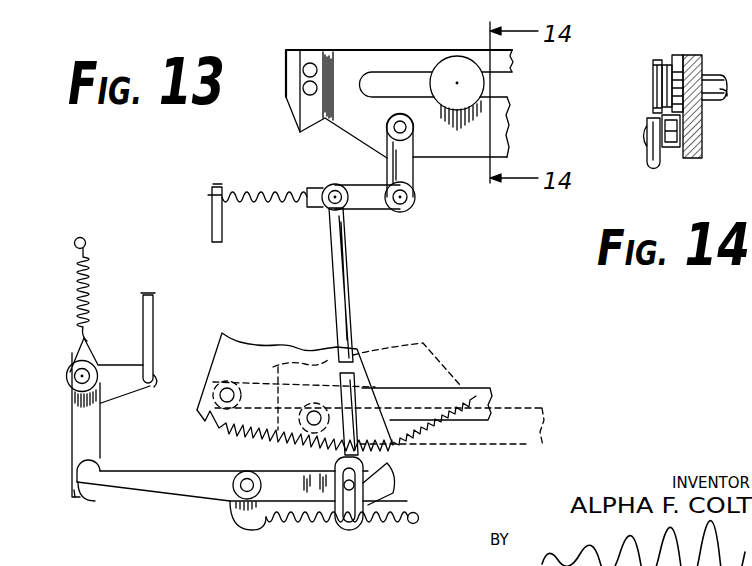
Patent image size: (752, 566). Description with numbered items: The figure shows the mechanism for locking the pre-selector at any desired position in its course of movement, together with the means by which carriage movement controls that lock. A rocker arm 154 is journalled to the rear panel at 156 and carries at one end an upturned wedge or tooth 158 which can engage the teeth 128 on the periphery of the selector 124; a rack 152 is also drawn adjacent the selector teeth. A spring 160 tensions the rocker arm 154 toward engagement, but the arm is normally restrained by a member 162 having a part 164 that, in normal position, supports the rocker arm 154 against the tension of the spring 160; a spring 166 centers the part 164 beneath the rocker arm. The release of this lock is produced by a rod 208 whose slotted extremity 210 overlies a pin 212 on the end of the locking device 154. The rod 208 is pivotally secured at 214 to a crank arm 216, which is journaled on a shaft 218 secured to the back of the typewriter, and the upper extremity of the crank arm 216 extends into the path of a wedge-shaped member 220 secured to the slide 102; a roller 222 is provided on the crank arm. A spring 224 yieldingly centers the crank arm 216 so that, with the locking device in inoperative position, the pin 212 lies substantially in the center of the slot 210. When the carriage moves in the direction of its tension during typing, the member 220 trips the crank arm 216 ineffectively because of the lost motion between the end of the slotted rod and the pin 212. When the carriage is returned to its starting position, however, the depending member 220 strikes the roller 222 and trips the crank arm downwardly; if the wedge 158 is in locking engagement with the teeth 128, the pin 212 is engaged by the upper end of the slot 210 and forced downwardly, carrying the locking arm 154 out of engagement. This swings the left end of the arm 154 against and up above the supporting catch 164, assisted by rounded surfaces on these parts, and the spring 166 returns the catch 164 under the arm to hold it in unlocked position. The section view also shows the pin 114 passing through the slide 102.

In FIG. 13, the slide 102 is at (493, 134).
In FIG. 14, the slide 102 is at (699, 57).
In FIG. 13, the pin 114 is at (476, 86).
In FIG. 14, the pin 114 is at (653, 87).
In FIG. 13, the selector 124 is at (237, 345).
In FIG. 13, the teeth 128 is at (214, 426).
In FIG. 13, the rack bar 152 is at (438, 395).
In FIG. 13, the rocker arm 154 is at (183, 501).
In FIG. 13, the journal 156 is at (246, 472).
In FIG. 13, the upturned wedge or tooth 158 is at (396, 467).
In FIG. 13, the spring 160 is at (320, 523).
In FIG. 13, the member 162 is at (72, 412).
In FIG. 13, the part 164 is at (80, 497).
In FIG. 13, the spring 166 is at (97, 279).
In FIG. 13, the rod 208 is at (350, 291).
In FIG. 13, the slotted extremity 210 is at (337, 462).
In FIG. 13, the pin 212 is at (355, 487).
In FIG. 13, the pivot 214 is at (343, 203).
In FIG. 13, the crank arm 216 is at (414, 176).
In FIG. 14, the crank arm 216 is at (652, 158).
In FIG. 13, the shaft 218 is at (414, 199).
In FIG. 13, the wedge-shaped member 220 is at (300, 114).
In FIG. 14, the wedge-shaped member 220 is at (695, 37).
In FIG. 13, the roller 222 is at (388, 131).
In FIG. 14, the roller 222 is at (668, 148).
In FIG. 13, the spring 224 is at (285, 186).